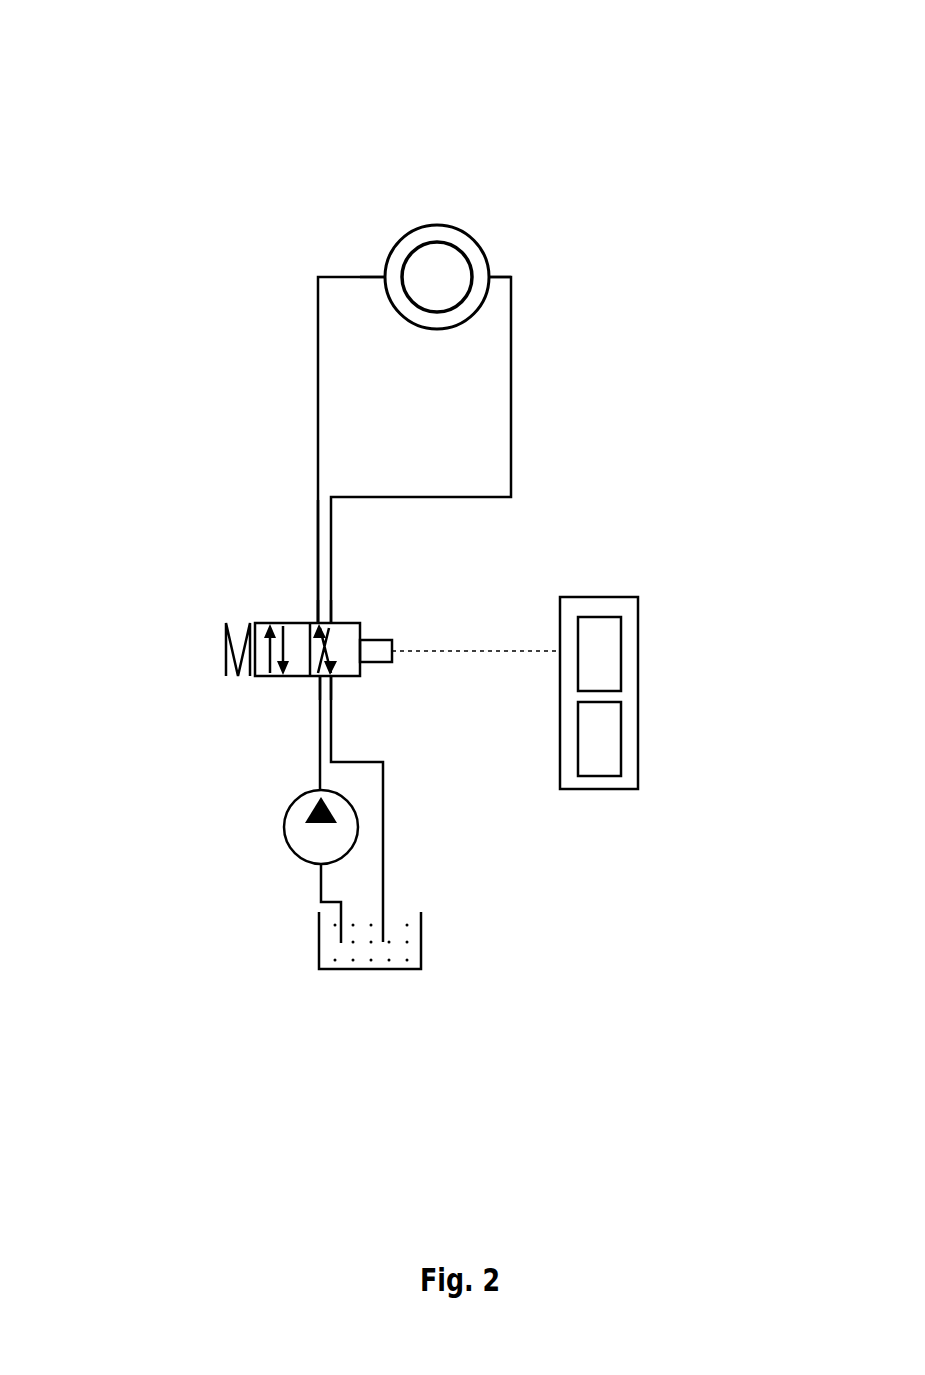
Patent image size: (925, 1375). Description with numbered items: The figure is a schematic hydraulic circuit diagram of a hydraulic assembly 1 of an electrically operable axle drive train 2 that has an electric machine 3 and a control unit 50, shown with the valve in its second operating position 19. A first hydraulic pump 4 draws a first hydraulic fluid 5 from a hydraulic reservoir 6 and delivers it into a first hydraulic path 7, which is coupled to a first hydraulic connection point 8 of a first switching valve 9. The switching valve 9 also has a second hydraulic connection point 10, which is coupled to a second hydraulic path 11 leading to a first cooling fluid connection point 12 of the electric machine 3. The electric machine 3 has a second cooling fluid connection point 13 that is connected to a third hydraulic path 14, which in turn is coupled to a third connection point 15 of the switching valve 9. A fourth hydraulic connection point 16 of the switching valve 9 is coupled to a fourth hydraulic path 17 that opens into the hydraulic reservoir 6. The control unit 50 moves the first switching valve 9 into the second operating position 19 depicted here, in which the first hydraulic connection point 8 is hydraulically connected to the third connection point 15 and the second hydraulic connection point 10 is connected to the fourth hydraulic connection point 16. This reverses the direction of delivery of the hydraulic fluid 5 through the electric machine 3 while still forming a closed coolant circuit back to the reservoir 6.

The hydraulic assembly 1 is at (262, 188).
The electrically operable axle drive train 2 is at (78, 94).
The electric machine 3 is at (438, 226).
The first hydraulic pump 4 is at (284, 830).
The first hydraulic fluid 5 is at (356, 948).
The hydraulic reservoir 6 is at (421, 950).
The first hydraulic path 7 is at (318, 775).
The first hydraulic connection point 8 is at (318, 680).
The first switching valve 9 is at (152, 645).
The second hydraulic connection point 10 is at (316, 622).
The second hydraulic path 11 is at (316, 395).
The first cooling fluid connection point 12 is at (387, 272).
The second cooling fluid connection point 13 is at (490, 266).
The third hydraulic path 14 is at (510, 383).
The third connection point 15 is at (336, 622).
The fourth hydraulic connection point 16 is at (328, 678).
The fourth hydraulic path 17 is at (333, 760).
The second operating position 19 is at (296, 583).
The control unit 50 is at (638, 730).